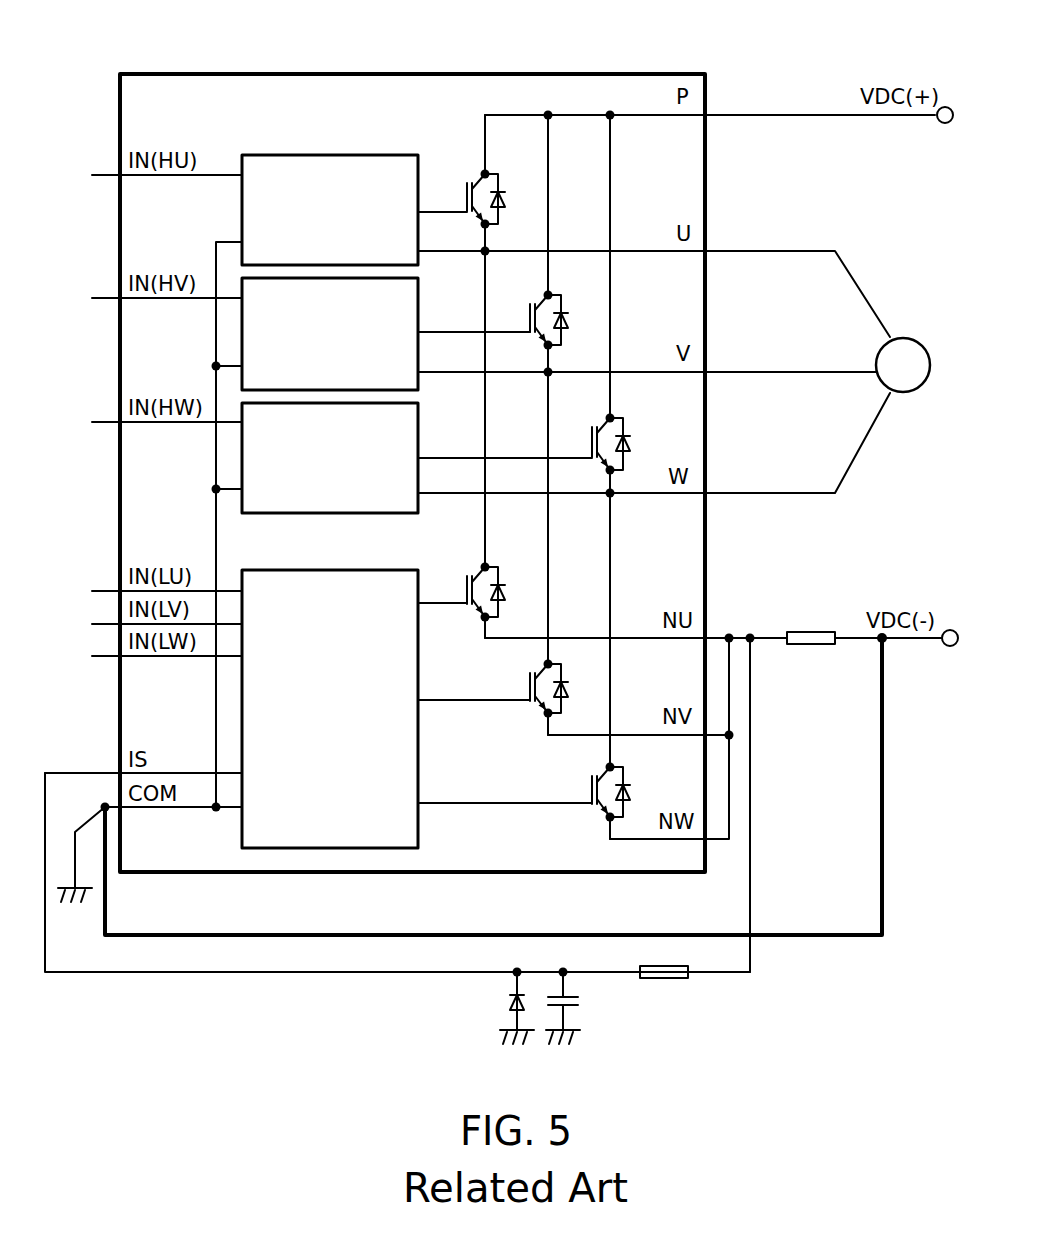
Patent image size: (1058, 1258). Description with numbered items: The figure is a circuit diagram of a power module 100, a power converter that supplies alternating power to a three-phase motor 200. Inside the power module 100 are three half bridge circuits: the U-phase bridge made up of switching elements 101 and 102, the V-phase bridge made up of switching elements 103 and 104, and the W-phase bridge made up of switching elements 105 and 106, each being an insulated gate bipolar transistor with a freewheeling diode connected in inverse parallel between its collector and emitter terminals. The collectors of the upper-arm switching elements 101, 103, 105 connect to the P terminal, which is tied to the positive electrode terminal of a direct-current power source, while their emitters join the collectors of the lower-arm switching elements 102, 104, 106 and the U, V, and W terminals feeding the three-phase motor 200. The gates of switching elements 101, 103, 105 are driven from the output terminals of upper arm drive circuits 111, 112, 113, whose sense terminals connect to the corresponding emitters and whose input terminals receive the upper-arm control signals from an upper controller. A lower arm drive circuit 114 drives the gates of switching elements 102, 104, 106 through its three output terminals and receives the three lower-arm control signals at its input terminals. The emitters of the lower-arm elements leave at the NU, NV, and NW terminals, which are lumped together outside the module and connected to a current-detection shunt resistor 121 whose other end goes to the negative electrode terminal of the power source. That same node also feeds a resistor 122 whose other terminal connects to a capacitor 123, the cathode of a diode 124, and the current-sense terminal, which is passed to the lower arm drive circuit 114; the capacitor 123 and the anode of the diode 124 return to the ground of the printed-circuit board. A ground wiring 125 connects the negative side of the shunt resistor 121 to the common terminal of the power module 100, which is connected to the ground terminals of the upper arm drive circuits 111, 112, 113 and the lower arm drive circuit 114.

The power module 100 is at (348, 72).
The switching element 101 is at (465, 197).
The switching element 102 is at (465, 588).
The switching element 103 is at (528, 318).
The switching element 104 is at (528, 688).
The switching element 105 is at (590, 440).
The switching element 106 is at (590, 790).
The upper arm drive circuit 111 is at (420, 172).
The upper arm drive circuit 112 is at (420, 318).
The upper arm drive circuit 113 is at (420, 452).
The lower arm drive circuit 114 is at (322, 570).
The shunt resistor 121 is at (812, 630).
The resistor 122 is at (668, 980).
The capacitor 123 is at (575, 1005).
The diode 124 is at (512, 1002).
The ground wiring 125 is at (672, 932).
The three-phase motor 200 is at (905, 338).